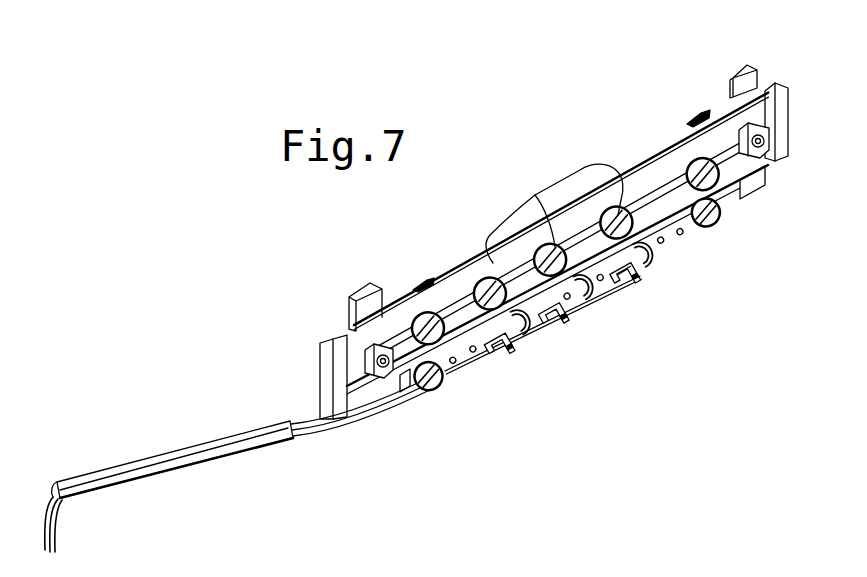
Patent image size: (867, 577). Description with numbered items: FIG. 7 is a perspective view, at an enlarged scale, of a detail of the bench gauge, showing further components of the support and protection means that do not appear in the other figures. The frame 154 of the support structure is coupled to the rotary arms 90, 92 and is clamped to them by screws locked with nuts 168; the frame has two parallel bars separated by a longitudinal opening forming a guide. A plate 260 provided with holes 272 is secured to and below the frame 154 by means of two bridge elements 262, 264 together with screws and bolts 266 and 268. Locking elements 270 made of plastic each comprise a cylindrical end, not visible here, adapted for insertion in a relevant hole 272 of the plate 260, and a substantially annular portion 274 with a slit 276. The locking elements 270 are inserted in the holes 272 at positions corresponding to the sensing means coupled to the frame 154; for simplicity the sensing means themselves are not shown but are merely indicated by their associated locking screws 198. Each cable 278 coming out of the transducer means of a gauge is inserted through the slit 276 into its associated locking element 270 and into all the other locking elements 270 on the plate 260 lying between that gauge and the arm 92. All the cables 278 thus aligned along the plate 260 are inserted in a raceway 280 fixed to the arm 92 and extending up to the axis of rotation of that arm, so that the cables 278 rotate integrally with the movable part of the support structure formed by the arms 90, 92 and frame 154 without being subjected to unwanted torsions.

The rotary arm 90 is at (750, 67).
The rotary arm 92 is at (357, 292).
The frame 154 is at (576, 150).
The nut 168 is at (757, 134).
The screw 198 is at (535, 196).
The plate 260 is at (664, 238).
The bridge element 262 is at (707, 117).
The bridge element 264 is at (429, 277).
The screws and bolts 266 is at (717, 203).
The screws and bolts 268 is at (690, 167).
The locking element 270 is at (652, 295).
The hole 272 is at (665, 243).
The annular portion 274 is at (641, 291).
The slit 276 is at (645, 277).
The cable 278 is at (597, 308).
The raceway 280 is at (167, 452).